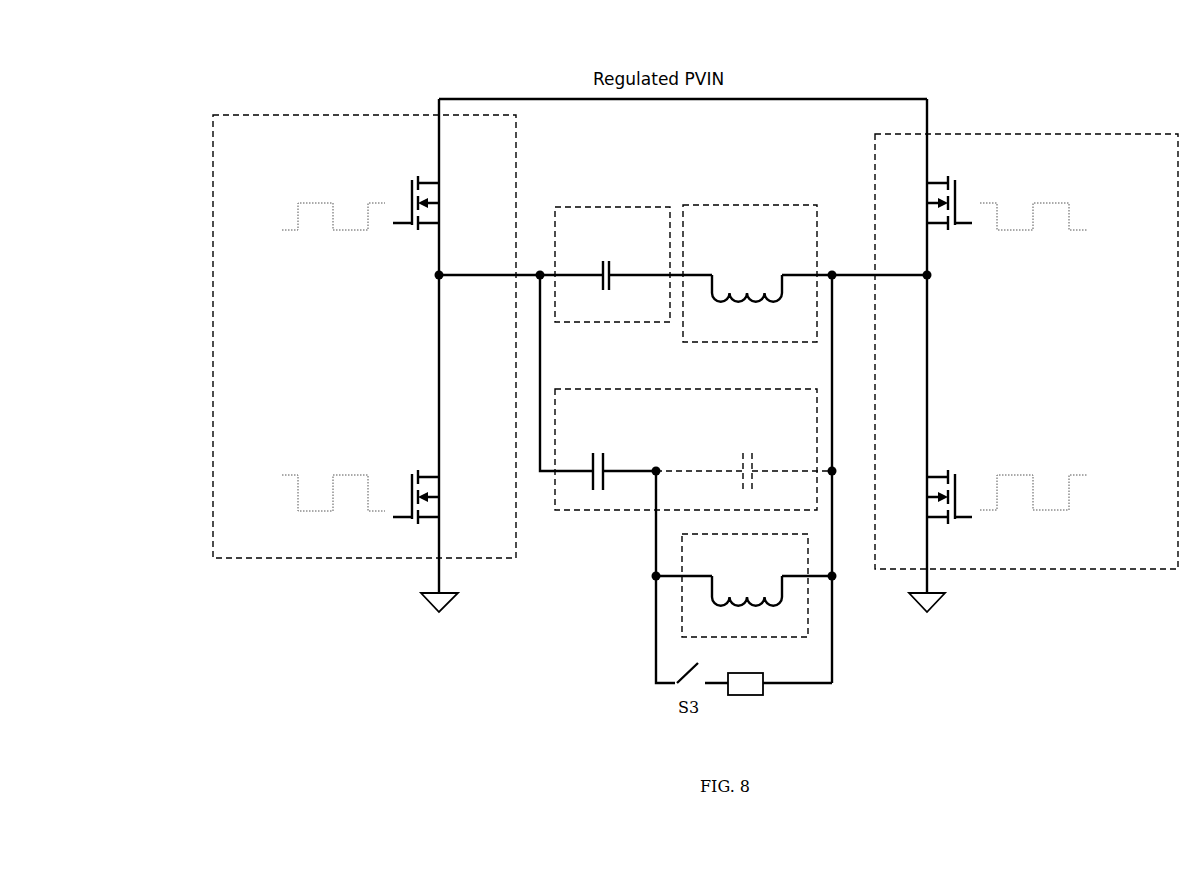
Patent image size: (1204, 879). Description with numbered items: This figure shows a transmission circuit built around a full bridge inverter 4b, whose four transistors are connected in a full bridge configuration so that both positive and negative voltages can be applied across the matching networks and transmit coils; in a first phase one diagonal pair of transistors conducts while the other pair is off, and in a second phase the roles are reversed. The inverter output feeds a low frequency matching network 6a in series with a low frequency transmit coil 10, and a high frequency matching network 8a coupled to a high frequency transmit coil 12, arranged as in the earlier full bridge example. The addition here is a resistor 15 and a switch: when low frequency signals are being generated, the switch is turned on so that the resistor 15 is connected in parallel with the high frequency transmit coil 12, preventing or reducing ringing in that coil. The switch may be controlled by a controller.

The full bridge inverter 4b is at (233, 110).
The low frequency matching network 6a is at (635, 205).
The low frequency transmit coil 10 is at (757, 203).
The high frequency matching network 8a is at (673, 393).
The high frequency transmit coil 12 is at (685, 573).
The resistor 15 is at (748, 697).